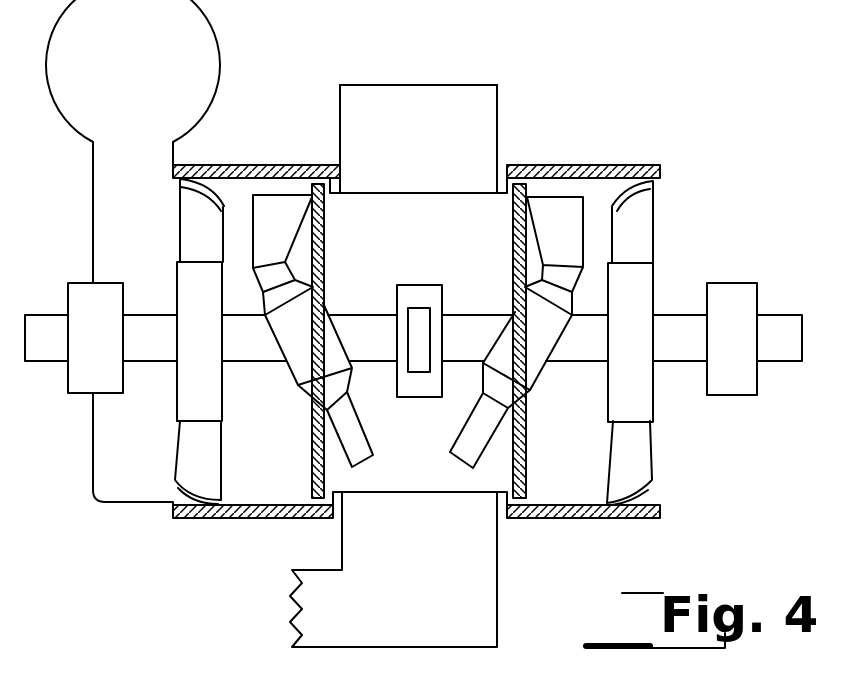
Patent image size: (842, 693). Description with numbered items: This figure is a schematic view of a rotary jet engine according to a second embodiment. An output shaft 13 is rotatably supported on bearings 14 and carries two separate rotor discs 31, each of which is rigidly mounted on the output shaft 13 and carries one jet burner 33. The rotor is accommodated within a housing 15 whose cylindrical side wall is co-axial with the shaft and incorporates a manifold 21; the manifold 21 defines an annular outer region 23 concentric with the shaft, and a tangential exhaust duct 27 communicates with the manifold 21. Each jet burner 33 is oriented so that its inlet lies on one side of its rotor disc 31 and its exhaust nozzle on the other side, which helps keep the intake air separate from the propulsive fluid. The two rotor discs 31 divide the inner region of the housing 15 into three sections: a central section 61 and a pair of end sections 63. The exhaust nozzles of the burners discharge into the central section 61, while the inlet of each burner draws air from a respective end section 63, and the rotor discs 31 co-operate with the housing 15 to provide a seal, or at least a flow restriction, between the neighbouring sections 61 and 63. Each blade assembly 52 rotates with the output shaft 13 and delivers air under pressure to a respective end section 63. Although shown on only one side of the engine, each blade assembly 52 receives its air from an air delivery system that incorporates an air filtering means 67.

The output shaft 13 is at (682, 327).
The bearings 14 is at (83, 372).
The housing 15 is at (555, 684).
The manifold 21 is at (497, 106).
The annular outer region 23 is at (440, 102).
The tangential exhaust duct 27 is at (487, 603).
The rotor disc 31 is at (312, 228).
The jet burner 33 is at (305, 366).
The blade assembly 52 is at (655, 210).
The central section 61 is at (475, 263).
The end section 63 is at (258, 406).
The air filtering means 67 is at (213, 50).